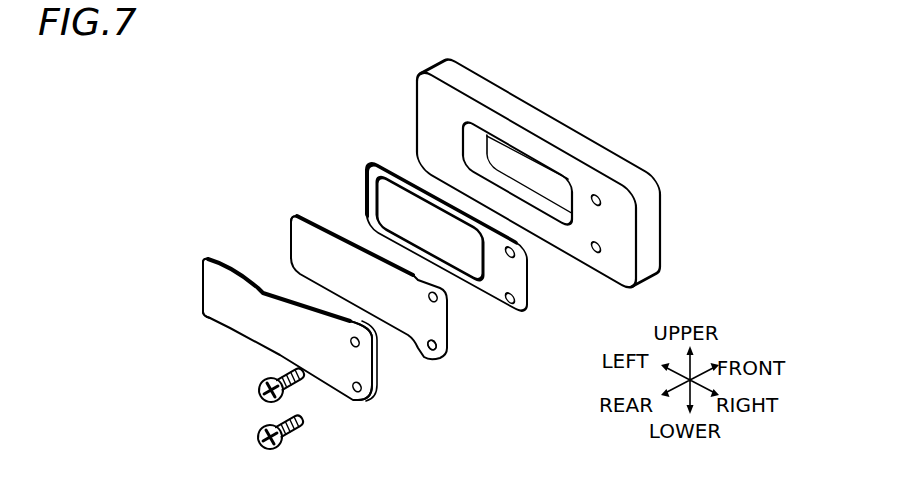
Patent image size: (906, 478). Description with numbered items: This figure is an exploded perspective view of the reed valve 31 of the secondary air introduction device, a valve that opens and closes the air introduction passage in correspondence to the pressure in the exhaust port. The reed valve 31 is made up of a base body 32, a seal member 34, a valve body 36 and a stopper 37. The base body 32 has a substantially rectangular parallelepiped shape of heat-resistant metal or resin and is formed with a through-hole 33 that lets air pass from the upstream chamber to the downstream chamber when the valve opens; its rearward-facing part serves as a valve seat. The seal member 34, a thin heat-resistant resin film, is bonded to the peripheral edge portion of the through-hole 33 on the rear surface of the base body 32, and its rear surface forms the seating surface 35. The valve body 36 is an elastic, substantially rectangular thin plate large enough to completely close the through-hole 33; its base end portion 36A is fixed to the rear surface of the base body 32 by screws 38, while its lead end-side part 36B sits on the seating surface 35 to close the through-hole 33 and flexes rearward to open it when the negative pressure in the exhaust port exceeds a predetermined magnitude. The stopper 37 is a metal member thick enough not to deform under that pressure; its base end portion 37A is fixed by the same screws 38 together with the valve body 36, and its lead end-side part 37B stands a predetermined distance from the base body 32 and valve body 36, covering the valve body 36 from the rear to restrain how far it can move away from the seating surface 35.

The reed valve 31 is at (270, 94).
The base body 32 is at (455, 66).
The through-hole 33 is at (556, 214).
The seal member 34 is at (403, 172).
The seating surface 35 is at (372, 200).
The valve body 36 is at (343, 232).
The base end portion of the valve body 36A is at (447, 331).
The lead end-side part of the valve body 36B is at (292, 240).
The stopper 37 is at (262, 290).
The base end portion of the stopper 37A is at (374, 368).
The lead end-side part of the stopper 37B is at (210, 298).
The screws 38 is at (258, 387).